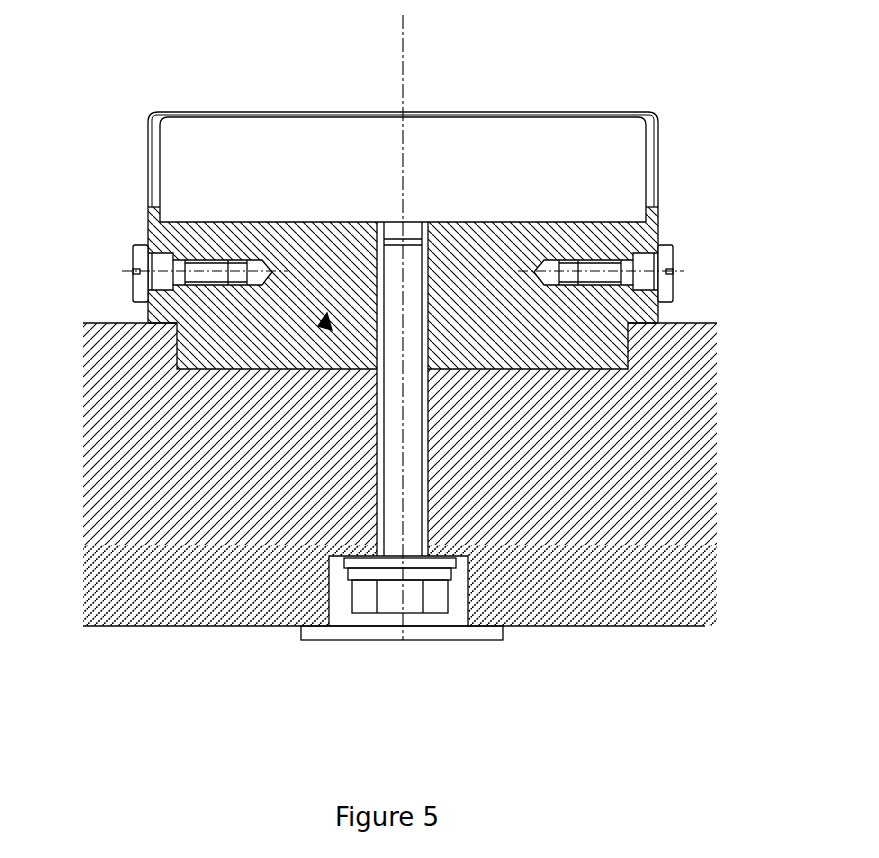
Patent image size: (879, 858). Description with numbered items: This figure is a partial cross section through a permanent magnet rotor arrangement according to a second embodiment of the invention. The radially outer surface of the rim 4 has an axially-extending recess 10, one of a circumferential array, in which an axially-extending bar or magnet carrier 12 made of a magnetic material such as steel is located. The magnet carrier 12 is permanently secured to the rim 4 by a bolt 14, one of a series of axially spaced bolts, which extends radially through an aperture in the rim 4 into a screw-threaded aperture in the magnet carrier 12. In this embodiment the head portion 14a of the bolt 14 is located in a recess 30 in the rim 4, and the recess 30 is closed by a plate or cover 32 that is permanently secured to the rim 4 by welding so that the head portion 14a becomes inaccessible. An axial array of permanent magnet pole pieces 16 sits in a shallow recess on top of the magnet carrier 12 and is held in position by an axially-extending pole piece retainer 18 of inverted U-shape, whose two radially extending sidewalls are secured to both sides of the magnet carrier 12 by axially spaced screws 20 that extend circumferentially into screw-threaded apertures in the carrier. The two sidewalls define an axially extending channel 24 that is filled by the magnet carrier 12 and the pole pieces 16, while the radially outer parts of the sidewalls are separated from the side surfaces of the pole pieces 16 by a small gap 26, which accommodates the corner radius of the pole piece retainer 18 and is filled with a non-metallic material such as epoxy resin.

The rim 4 is at (557, 507).
The recess 10 is at (172, 343).
The magnet carrier 12 is at (572, 317).
The bolt 14 is at (390, 513).
The head portion 14a is at (428, 575).
The permanent magnet pole piece 16 is at (458, 163).
The pole piece retainer 18 is at (148, 178).
The screw 20 is at (142, 250).
The channel 24 is at (324, 327).
The gap 26 is at (158, 142).
The recess 30 is at (342, 607).
The plate or cover 32 is at (393, 633).